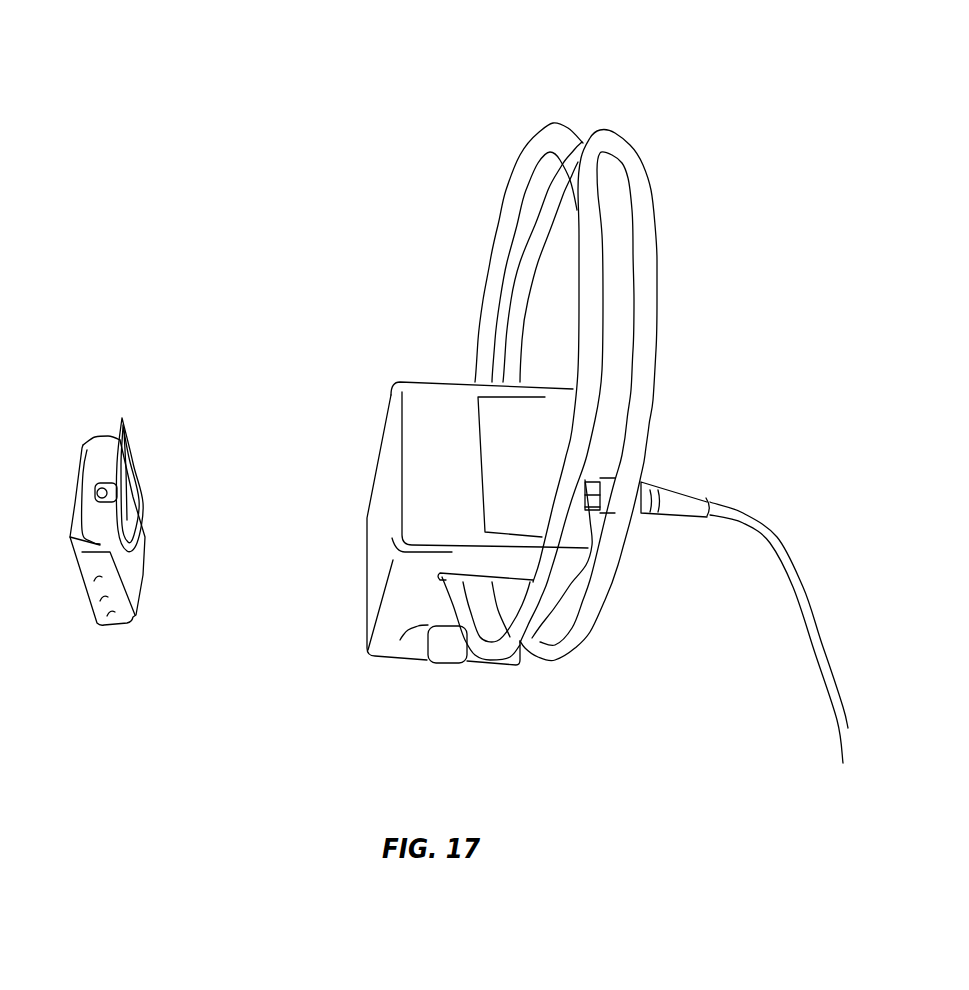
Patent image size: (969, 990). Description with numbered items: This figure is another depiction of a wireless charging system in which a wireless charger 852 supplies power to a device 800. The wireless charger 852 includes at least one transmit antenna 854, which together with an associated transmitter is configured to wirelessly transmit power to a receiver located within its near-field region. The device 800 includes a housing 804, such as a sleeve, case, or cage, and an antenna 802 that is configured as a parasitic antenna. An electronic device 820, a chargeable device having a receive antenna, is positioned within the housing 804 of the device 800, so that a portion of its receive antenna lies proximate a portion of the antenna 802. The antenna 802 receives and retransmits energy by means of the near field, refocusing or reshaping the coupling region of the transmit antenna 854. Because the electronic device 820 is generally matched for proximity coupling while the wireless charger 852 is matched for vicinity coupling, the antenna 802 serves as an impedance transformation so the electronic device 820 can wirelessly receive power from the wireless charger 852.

The device 800 is at (108, 378).
The antenna 802 is at (127, 426).
The housing 804 is at (90, 607).
The electronic device 820 is at (98, 463).
The wireless charger 852 is at (532, 78).
The transmit antenna 854 is at (506, 190).